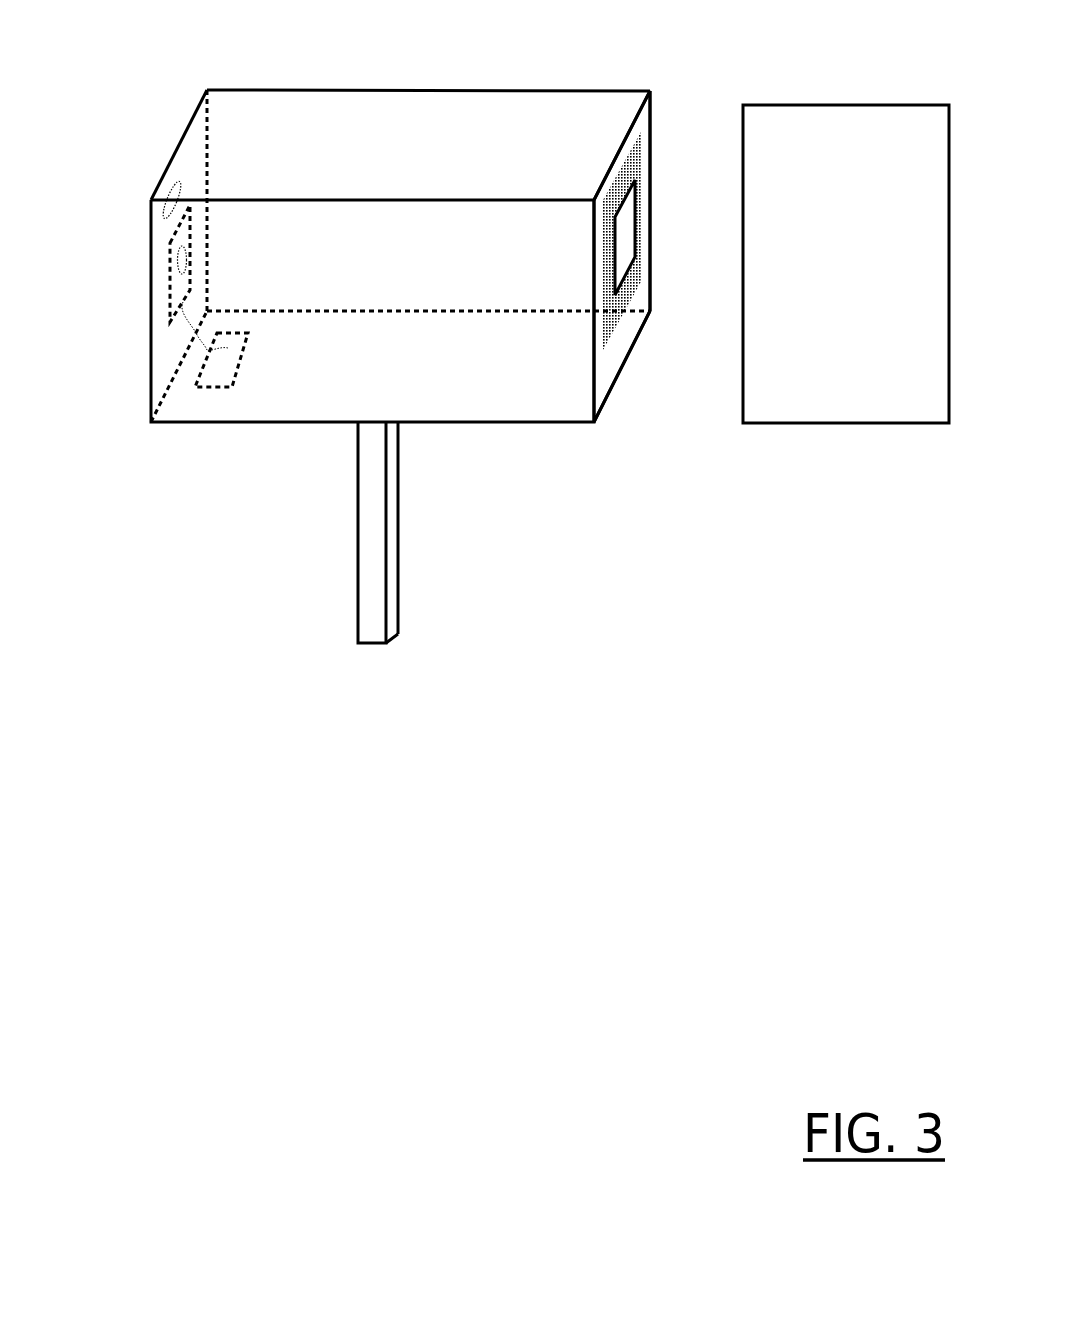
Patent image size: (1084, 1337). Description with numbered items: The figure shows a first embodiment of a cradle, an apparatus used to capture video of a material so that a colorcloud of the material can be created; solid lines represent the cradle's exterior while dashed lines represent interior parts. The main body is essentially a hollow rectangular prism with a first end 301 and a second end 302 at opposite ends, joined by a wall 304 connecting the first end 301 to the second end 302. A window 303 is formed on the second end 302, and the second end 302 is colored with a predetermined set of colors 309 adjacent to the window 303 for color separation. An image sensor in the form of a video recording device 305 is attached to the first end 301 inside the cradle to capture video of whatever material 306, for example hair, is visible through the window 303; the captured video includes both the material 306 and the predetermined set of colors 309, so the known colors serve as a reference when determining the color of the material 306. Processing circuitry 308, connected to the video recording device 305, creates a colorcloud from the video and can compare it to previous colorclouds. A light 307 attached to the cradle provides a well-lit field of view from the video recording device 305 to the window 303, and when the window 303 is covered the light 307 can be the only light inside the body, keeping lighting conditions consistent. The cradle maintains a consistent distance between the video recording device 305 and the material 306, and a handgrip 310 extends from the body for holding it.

The first end 301 is at (162, 360).
The second end 302 is at (603, 373).
The window 303 is at (627, 242).
The wall 304 is at (477, 110).
The video recording device 305 is at (173, 259).
The material 306 is at (770, 372).
The light 307 is at (173, 190).
The processing circuitry 308 is at (213, 375).
The predetermined set of colors 309 is at (638, 159).
The handgrip 310 is at (368, 522).